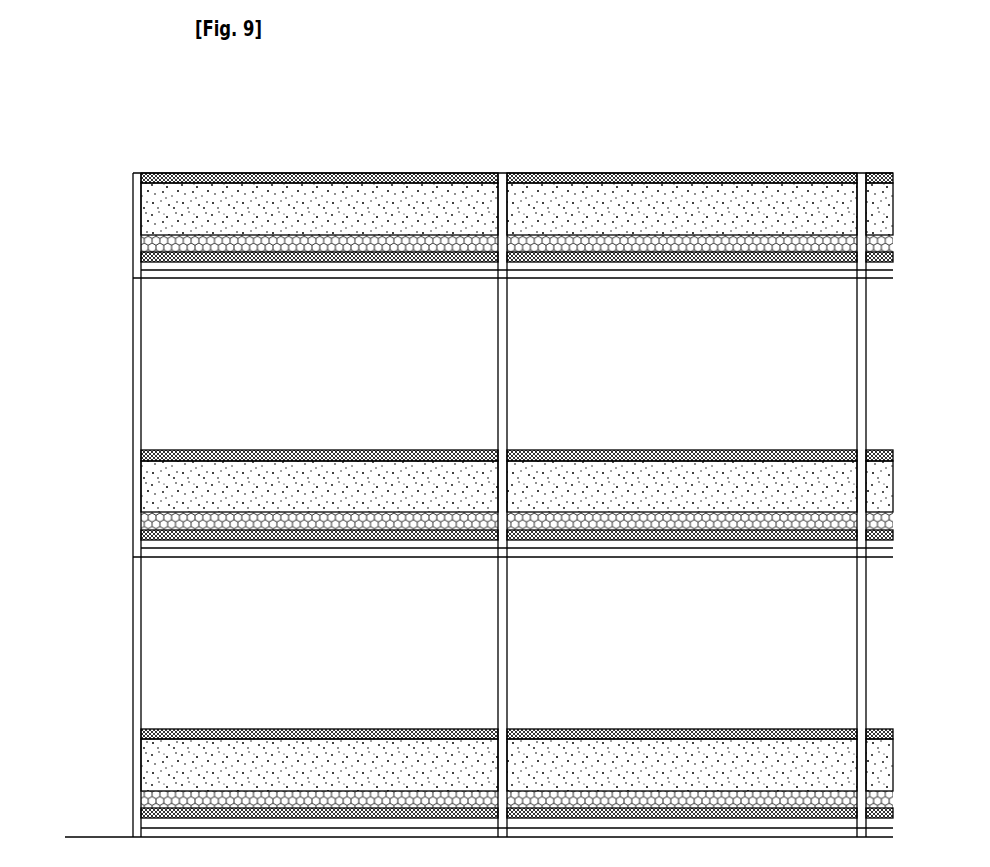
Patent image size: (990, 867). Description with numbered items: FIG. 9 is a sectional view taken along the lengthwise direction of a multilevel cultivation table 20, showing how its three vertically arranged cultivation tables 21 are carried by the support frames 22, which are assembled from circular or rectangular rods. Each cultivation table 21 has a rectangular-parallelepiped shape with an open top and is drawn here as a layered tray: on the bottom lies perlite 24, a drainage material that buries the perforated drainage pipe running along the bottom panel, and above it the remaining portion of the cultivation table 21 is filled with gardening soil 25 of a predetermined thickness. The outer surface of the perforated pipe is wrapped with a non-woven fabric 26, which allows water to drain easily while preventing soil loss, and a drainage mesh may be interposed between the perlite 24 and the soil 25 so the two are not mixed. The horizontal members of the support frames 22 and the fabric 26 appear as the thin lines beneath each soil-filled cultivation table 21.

The panel assembly 20 is at (133, 434).
The cultivation table 21 is at (141, 473).
The support frame 22 is at (137, 602).
The perlite 24 is at (160, 528).
The soil 25 is at (160, 503).
The non-woven fabric 26 is at (193, 270).